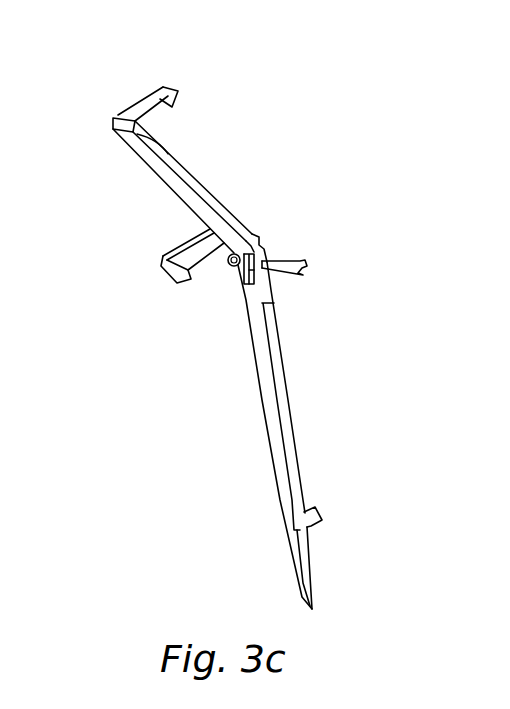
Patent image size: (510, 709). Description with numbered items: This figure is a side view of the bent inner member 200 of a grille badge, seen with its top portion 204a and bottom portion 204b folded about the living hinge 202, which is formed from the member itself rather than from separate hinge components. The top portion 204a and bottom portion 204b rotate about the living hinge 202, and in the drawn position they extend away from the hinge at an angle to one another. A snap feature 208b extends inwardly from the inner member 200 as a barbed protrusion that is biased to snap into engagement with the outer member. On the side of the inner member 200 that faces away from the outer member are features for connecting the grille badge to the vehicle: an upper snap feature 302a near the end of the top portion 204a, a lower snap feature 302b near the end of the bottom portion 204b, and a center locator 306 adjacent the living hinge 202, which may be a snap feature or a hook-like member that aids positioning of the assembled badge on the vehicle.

The inner member 200 is at (80, 160).
The living hinge 202 is at (232, 268).
The top portion 204a is at (205, 186).
The bottom portion 204b is at (268, 405).
The snap feature 208b is at (164, 255).
The upper snap feature 302a is at (160, 97).
The lower snap feature 302b is at (320, 510).
The center locator 306 is at (297, 260).